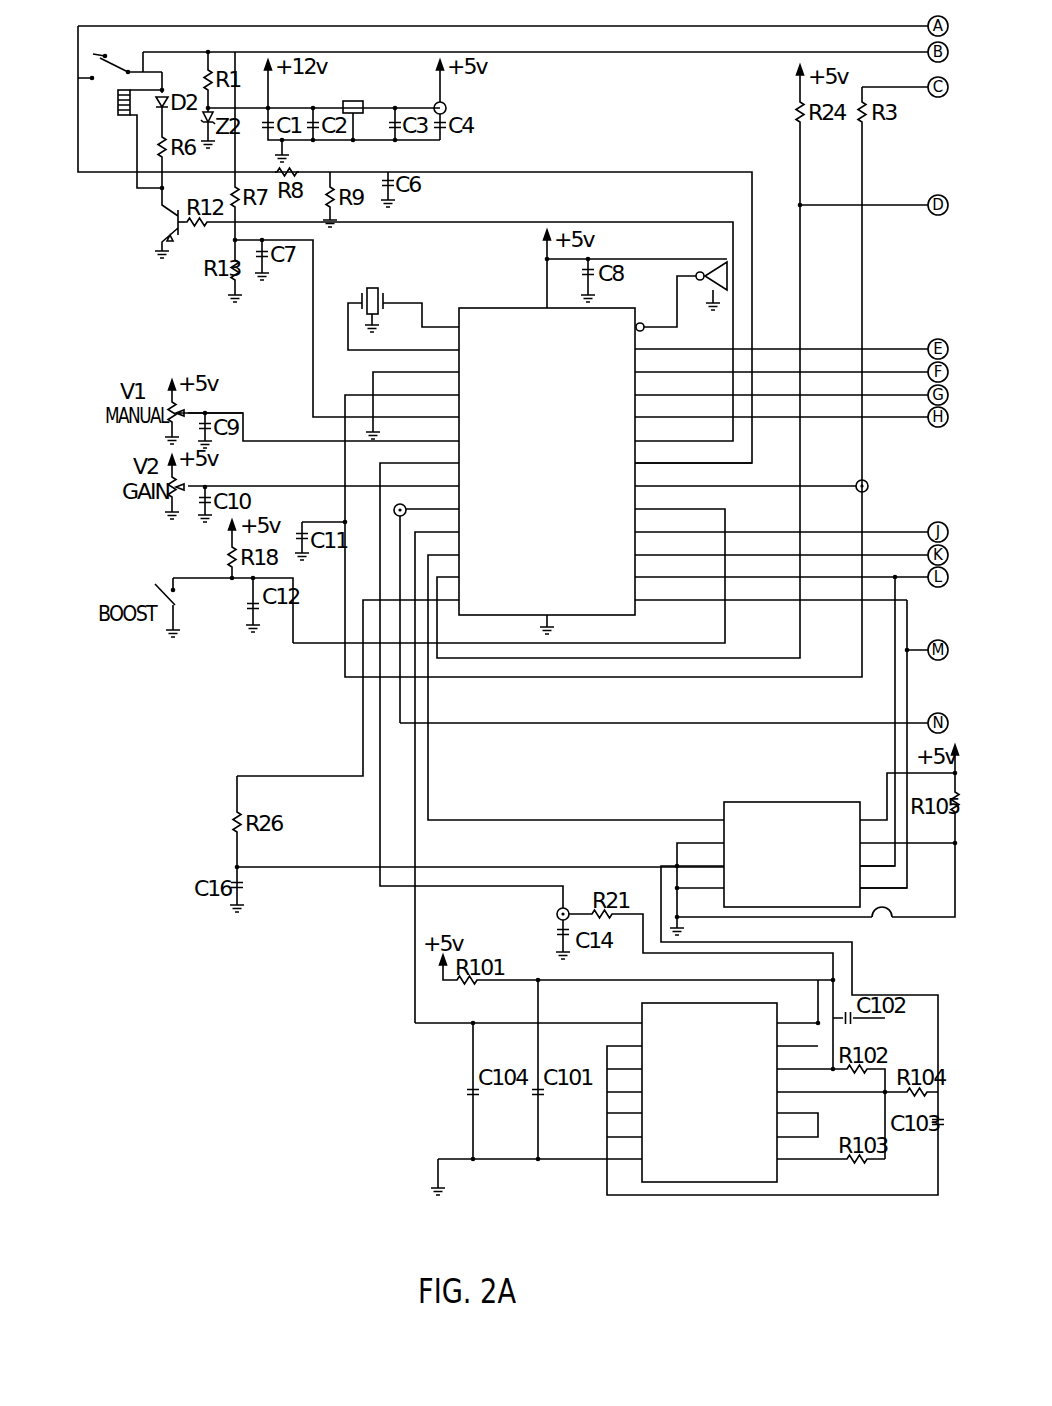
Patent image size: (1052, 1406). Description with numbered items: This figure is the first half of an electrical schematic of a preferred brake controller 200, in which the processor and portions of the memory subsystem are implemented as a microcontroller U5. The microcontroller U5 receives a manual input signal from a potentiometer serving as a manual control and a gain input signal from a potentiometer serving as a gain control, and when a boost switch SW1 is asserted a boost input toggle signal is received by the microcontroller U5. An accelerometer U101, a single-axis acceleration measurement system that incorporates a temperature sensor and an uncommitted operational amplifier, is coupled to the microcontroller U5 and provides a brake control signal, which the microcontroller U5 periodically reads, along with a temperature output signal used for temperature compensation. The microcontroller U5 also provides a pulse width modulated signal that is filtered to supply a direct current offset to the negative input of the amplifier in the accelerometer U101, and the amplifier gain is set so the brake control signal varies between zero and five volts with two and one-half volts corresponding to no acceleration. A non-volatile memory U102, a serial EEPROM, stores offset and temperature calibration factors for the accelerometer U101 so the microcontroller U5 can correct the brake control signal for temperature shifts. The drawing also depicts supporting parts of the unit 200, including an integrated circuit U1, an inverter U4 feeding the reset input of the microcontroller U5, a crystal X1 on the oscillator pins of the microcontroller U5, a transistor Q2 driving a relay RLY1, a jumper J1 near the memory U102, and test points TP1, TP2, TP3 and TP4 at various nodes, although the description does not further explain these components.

The brake controller 200 is at (277, 1080).
The microcontroller U5 is at (549, 448).
The accelerometer U101 is at (717, 1080).
The non-volatile memory U102 is at (794, 840).
The voltage regulator U1 is at (356, 95).
The reset inverter U4 is at (716, 271).
The crystal X1 is at (386, 305).
The transistor Q2 is at (158, 208).
The relay RLY1 is at (120, 108).
The boost switch SW1 is at (144, 606).
The jumper J1 is at (893, 907).
The test point 1 TP1 is at (459, 105).
The test point 2 TP2 is at (547, 914).
The test point 3 TP3 is at (426, 604).
The test point 4 TP4 is at (882, 487).